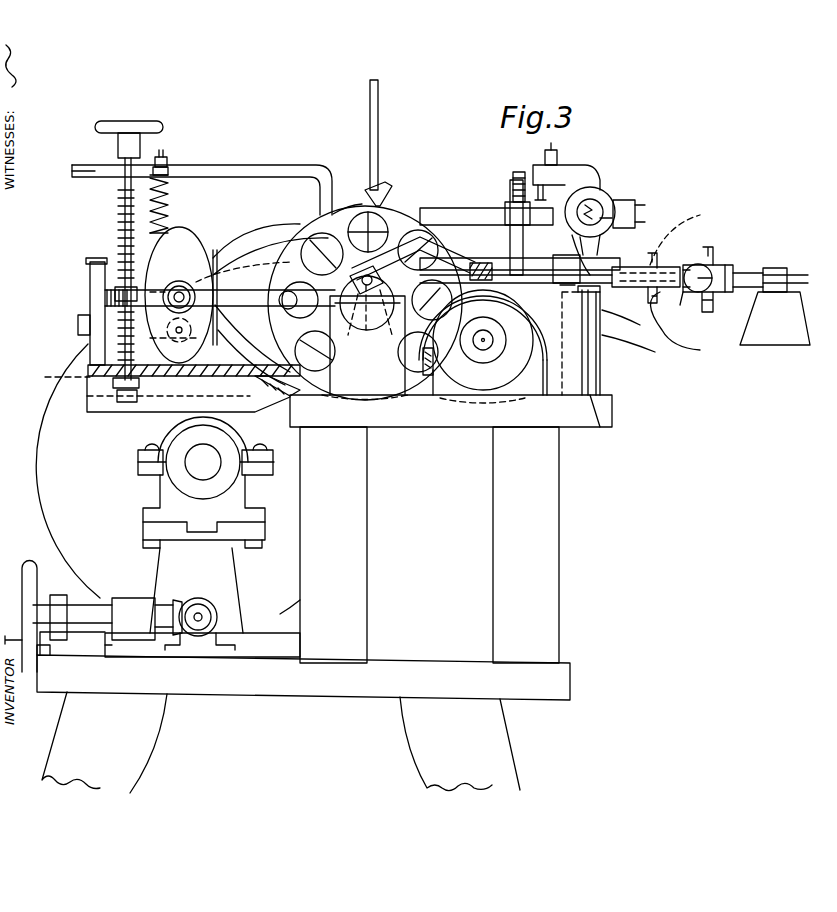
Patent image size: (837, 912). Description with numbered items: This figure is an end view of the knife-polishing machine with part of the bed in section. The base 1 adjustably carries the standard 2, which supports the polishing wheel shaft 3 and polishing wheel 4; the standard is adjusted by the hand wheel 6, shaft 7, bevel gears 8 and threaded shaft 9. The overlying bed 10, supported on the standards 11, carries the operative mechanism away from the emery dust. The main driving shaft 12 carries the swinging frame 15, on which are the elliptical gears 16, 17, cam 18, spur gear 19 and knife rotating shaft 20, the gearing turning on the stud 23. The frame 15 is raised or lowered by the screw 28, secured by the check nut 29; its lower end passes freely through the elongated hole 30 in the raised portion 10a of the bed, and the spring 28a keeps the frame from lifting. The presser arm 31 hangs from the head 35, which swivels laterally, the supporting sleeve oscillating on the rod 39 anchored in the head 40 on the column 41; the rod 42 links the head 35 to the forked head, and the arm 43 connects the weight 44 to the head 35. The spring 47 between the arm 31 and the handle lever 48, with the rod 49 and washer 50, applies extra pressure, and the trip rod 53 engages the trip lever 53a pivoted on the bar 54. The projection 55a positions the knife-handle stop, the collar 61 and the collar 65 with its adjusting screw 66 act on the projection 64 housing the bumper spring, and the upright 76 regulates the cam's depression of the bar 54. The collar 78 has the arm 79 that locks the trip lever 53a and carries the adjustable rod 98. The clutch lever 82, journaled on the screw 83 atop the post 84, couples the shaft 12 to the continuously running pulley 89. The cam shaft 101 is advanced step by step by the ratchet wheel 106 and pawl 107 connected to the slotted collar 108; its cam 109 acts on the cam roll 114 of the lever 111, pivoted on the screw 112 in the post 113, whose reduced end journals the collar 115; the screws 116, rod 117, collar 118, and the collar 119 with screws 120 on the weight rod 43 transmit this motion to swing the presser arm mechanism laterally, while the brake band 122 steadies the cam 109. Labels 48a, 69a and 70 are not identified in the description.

The base 1 is at (303, 719).
The standard 2 is at (202, 602).
The polishing wheel shaft 3 is at (206, 482).
The polishing wheel 4 is at (168, 479).
The hand wheel 6 is at (26, 613).
The shaft 7 is at (95, 603).
The bevel gears 8 is at (181, 606).
The threaded shaft 9 is at (206, 612).
The overlying bed 10 is at (451, 411).
The raised portion of the bed 10a is at (235, 372).
The standards 11 is at (429, 545).
The main driving shaft 12 is at (376, 313).
The swinging frame 15 is at (104, 295).
The elliptical gear 16 is at (236, 272).
The elliptical gear 17 is at (185, 235).
The cam 18 is at (158, 284).
The spur gear 19 is at (258, 232).
The knife rotating shaft 20 is at (180, 290).
The stud 23 is at (290, 292).
The screw 28 is at (120, 228).
The spring 28a is at (140, 384).
The check nut 29 is at (103, 272).
The elongated hole 30 is at (57, 378).
The presser arm 31 is at (228, 226).
The head 35 is at (548, 266).
The rod 39 is at (636, 210).
The head 40 is at (612, 218).
The column 41 is at (604, 314).
The rod 42 is at (464, 263).
The weight rod 43 is at (748, 274).
The weight 44 is at (775, 306).
The spring 47 is at (168, 200).
The handle lever 48 is at (202, 184).
The bar end 48a is at (100, 166).
The rod 49 is at (164, 158).
The washer 50 is at (170, 168).
The trip rod 53 is at (388, 186).
The trip lever 53a is at (378, 100).
The spring compression bar 54 is at (80, 327).
The projection 55a is at (592, 180).
The collar 61 is at (622, 205).
The projection 64 is at (600, 241).
The collar 65 is at (600, 194).
The adjusting screw 66 is at (557, 157).
The post 69a is at (525, 252).
The bolt 70 is at (538, 185).
The upright 76 is at (90, 277).
The collar 78 is at (594, 200).
The arm 79 is at (486, 208).
The clutch lever 82 is at (639, 350).
The screw 83 is at (633, 327).
The post 84 is at (598, 343).
The continuously running pulley 89 is at (348, 208).
The adjustable rod 98 is at (512, 182).
The cam shaft 101 is at (487, 348).
The ratchet wheel 106 is at (410, 355).
The pawl 107 is at (413, 258).
The slotted collar 108 is at (372, 322).
The cam 109 is at (483, 346).
The lever 111 is at (613, 285).
The screw 112 is at (650, 265).
The post 113 is at (604, 358).
The cam roll 114 is at (493, 342).
The collar 115 is at (655, 295).
The screws 116 is at (688, 289).
The rod 117 is at (690, 300).
The collar 118 is at (714, 293).
The collar 119 is at (722, 266).
The screws 120 is at (706, 327).
The brake band 122 is at (578, 398).